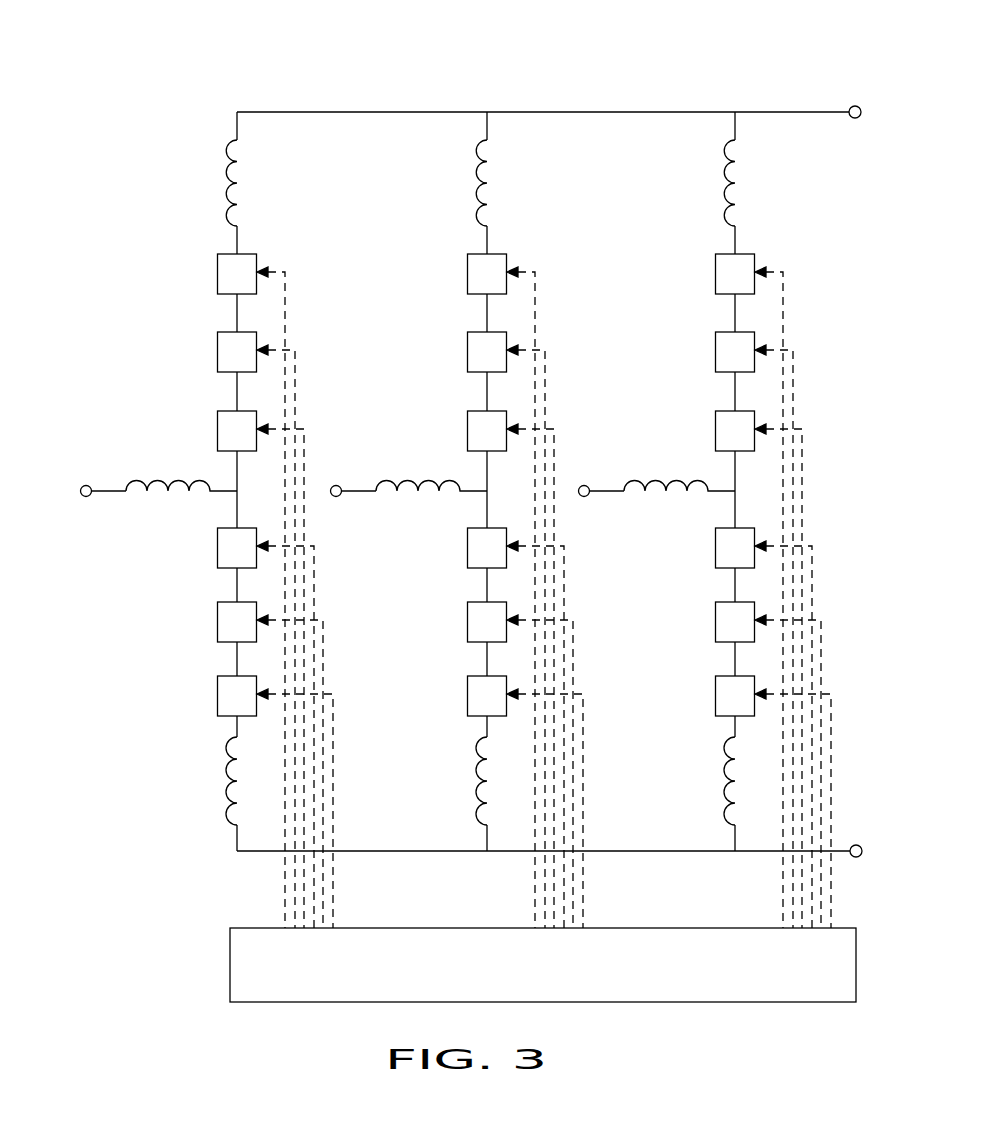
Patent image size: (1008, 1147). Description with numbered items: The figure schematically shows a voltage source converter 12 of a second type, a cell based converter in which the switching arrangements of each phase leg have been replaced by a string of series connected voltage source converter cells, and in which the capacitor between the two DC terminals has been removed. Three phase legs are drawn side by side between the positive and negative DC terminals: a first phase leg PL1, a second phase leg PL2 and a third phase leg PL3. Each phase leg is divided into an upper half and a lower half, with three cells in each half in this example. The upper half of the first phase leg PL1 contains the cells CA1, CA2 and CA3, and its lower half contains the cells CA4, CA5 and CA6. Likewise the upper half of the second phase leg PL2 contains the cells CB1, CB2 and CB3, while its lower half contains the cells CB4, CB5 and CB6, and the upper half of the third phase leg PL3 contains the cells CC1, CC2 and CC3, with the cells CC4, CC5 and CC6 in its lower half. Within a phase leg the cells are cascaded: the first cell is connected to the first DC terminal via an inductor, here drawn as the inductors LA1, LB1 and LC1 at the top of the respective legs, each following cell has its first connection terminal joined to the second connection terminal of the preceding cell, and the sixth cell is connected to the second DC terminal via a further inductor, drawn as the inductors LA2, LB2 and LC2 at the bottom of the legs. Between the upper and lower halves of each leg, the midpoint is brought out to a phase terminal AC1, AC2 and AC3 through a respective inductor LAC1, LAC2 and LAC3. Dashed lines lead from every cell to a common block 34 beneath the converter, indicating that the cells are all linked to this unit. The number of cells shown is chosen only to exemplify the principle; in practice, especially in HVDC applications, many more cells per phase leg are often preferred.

The voltage source converter 12 is at (181, 117).
The controller 34 is at (543, 965).
The first phase leg PL1 is at (240, 109).
The second phase leg PL2 is at (477, 109).
The third phase leg PL3 is at (732, 109).
The inductor LA1 is at (194, 183).
The inductor LA2 is at (197, 781).
The inductor LB1 is at (439, 183).
The inductor LB2 is at (448, 781).
The inductor LC1 is at (696, 183).
The inductor LC2 is at (696, 781).
The AC inductor LAC1 is at (181, 503).
The AC inductor LAC2 is at (431, 503).
The AC inductor LAC3 is at (679, 503).
The AC terminal 1 AC1 is at (98, 472).
The AC terminal 2 AC2 is at (344, 472).
The AC terminal 3 AC3 is at (598, 472).
The cell CA1 is at (215, 591).
The cell CA2 is at (220, 630).
The cell CA3 is at (224, 669).
The cell CA4 is at (229, 728).
The cell CA5 is at (234, 765).
The cell CA6 is at (239, 802).
The cell CB1 is at (465, 591).
The cell CB2 is at (470, 630).
The cell CB3 is at (474, 669).
The cell CB4 is at (479, 728).
The cell CB5 is at (484, 765).
The cell CB6 is at (489, 802).
The cell CC1 is at (711, 591).
The cell CC2 is at (716, 630).
The cell CC3 is at (720, 669).
The cell CC4 is at (725, 728).
The cell CC5 is at (730, 765).
The cell CC6 is at (735, 802).